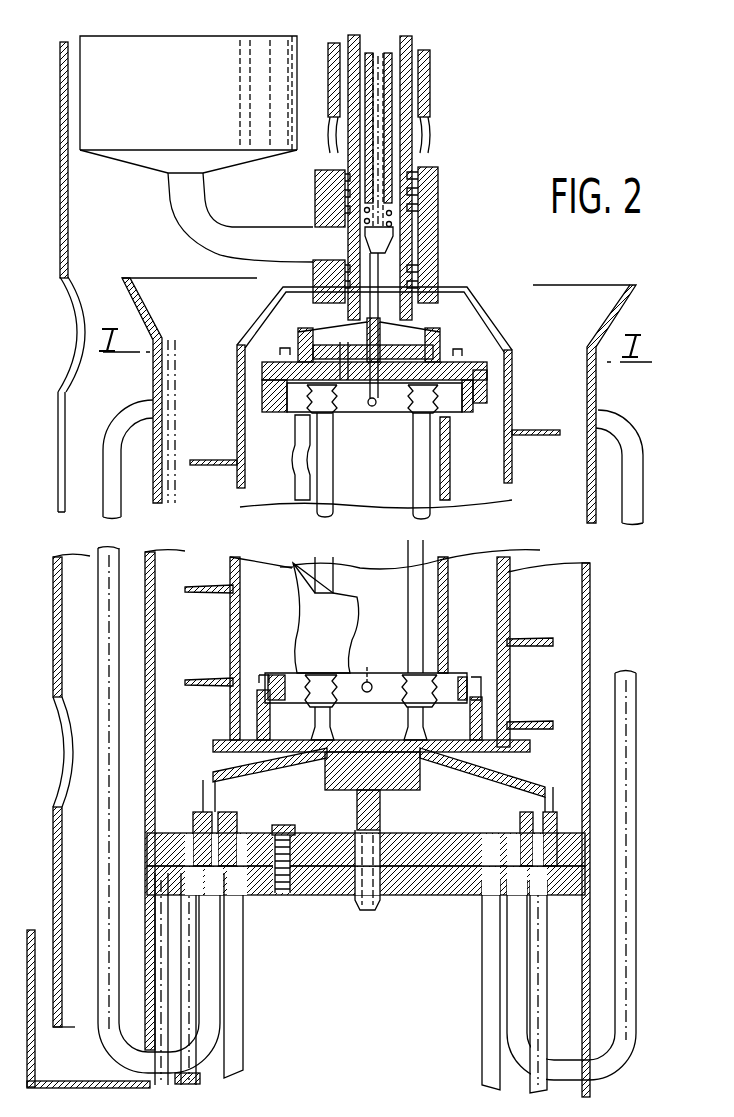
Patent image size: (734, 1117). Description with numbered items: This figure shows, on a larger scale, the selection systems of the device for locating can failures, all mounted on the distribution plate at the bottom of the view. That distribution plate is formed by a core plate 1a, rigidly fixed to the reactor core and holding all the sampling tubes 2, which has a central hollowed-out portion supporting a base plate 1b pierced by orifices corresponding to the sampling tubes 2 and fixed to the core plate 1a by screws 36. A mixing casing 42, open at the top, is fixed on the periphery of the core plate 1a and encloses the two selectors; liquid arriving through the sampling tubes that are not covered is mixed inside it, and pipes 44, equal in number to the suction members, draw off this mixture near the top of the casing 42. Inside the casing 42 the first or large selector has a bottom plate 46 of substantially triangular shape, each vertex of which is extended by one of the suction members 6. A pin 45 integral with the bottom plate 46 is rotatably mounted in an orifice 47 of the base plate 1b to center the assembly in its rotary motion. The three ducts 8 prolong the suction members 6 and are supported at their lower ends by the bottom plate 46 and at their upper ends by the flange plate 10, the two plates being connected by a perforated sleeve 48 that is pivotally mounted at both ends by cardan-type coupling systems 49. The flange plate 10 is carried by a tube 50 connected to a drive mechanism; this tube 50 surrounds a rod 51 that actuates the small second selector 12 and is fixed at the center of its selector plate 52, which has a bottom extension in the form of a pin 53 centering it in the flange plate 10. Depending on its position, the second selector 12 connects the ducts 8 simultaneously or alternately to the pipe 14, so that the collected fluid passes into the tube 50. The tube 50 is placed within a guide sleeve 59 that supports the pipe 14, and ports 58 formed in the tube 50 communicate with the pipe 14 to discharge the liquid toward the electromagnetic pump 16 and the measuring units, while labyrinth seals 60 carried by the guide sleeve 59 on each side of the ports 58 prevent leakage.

The electromagnetic pump 16 is at (212, 97).
The pipe 14 is at (268, 232).
The guide sleeve 59 is at (430, 84).
The tube 50 is at (400, 135).
The labyrinth seals 60 is at (413, 178).
The ports 58 is at (397, 237).
The rod 51 is at (378, 262).
The second selector 12 is at (342, 335).
The selector plate 52 is at (432, 331).
The flange plate 10 is at (487, 380).
The perforated sleeve 48 is at (450, 490).
The pin 53 is at (370, 405).
The ducts 8 is at (408, 552).
The cardan-type coupling systems 49 is at (462, 680).
The casing 42 is at (589, 620).
The pipes 44 is at (626, 692).
The sampling tubes 2 is at (487, 1030).
The bottom plate 46 is at (340, 777).
The suction members 6 is at (543, 810).
The orifice 47 is at (383, 836).
The base plate 1b is at (410, 870).
The core plate 1a is at (457, 900).
The screws 36 is at (275, 893).
The pin 45 is at (360, 892).